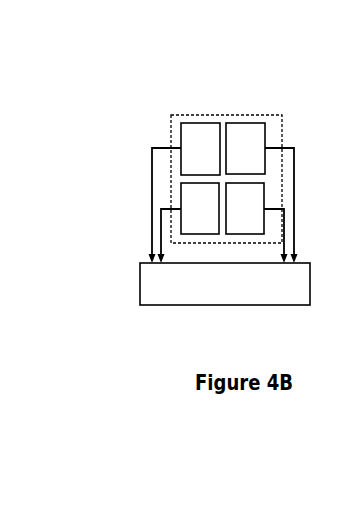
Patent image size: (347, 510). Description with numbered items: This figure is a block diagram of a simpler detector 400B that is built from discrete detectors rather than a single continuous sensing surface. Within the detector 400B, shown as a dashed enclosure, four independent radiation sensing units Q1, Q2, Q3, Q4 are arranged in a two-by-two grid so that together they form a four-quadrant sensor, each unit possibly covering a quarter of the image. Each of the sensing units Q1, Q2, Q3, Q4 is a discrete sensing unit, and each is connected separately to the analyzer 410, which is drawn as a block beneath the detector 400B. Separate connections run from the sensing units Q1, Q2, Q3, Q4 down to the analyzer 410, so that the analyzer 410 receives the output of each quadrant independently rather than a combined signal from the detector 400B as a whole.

The detector 400B is at (210, 110).
The radiation sensing unit Q1 is at (200, 149).
The radiation sensing unit Q2 is at (245, 148).
The radiation sensing unit Q3 is at (245, 208).
The radiation sensing unit Q4 is at (200, 208).
The analyzer 410 is at (153, 263).